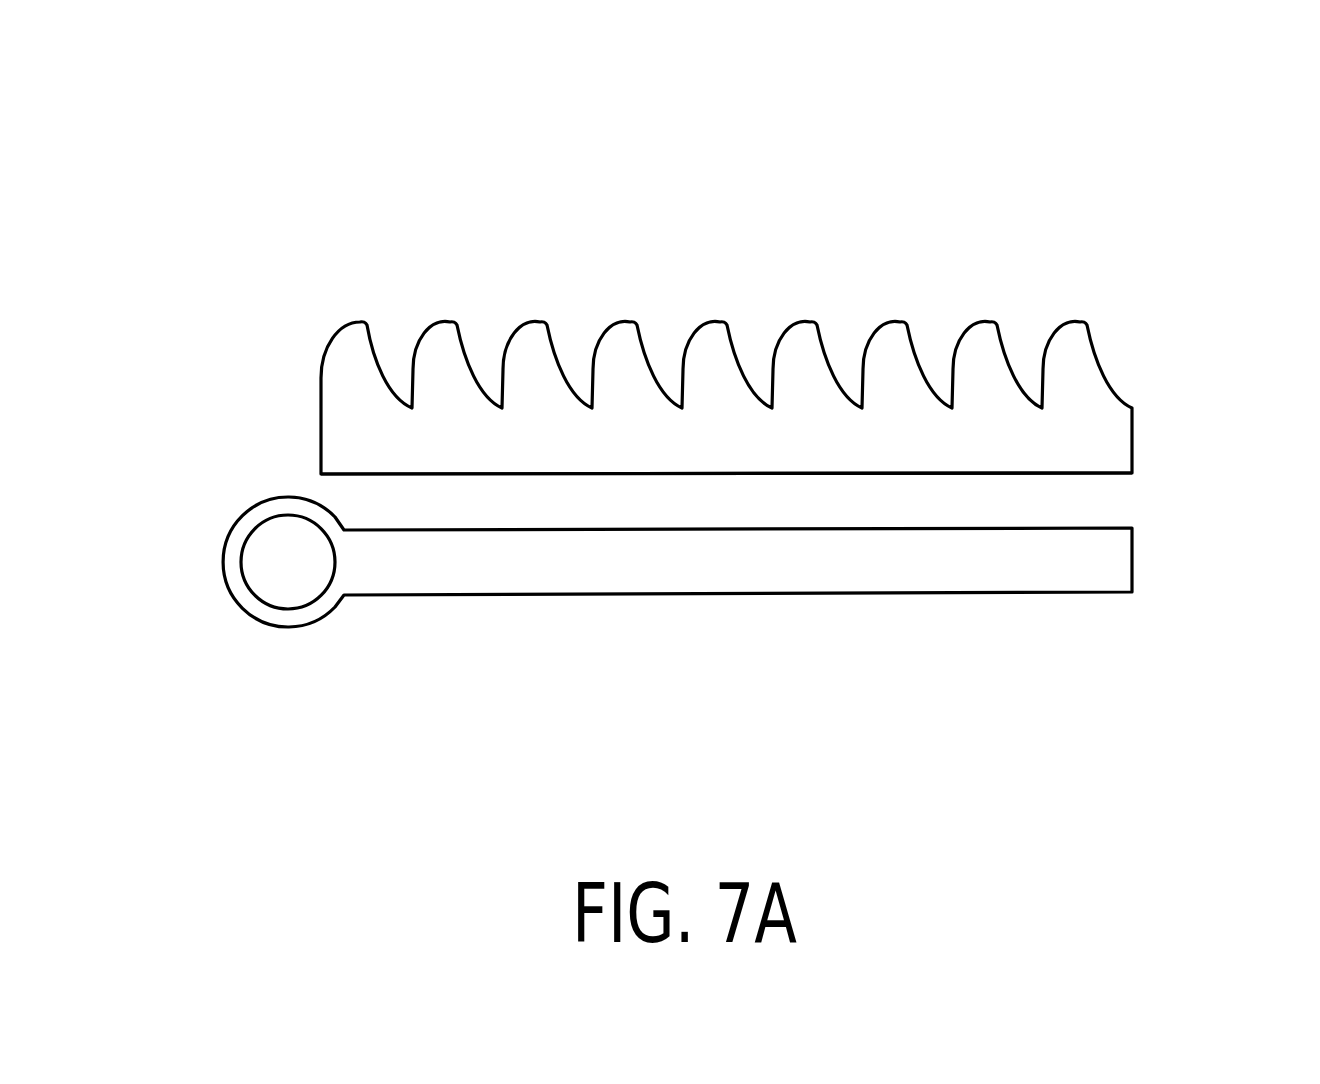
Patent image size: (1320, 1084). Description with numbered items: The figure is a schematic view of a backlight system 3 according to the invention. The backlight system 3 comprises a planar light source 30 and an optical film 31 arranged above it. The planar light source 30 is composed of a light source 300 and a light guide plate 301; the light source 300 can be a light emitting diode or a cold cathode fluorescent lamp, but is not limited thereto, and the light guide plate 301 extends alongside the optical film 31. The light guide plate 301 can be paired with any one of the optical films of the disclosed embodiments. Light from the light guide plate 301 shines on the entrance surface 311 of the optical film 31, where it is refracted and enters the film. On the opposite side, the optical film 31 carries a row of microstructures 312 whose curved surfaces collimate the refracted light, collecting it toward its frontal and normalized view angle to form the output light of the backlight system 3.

The backlight system 3 is at (696, 387).
The planar light source 30 is at (643, 556).
The light source 300 is at (282, 583).
The light guide plate 301 is at (1092, 583).
The optical film 31 is at (743, 402).
The entrance surface 311 is at (1102, 474).
The microstructure 312 is at (499, 320).